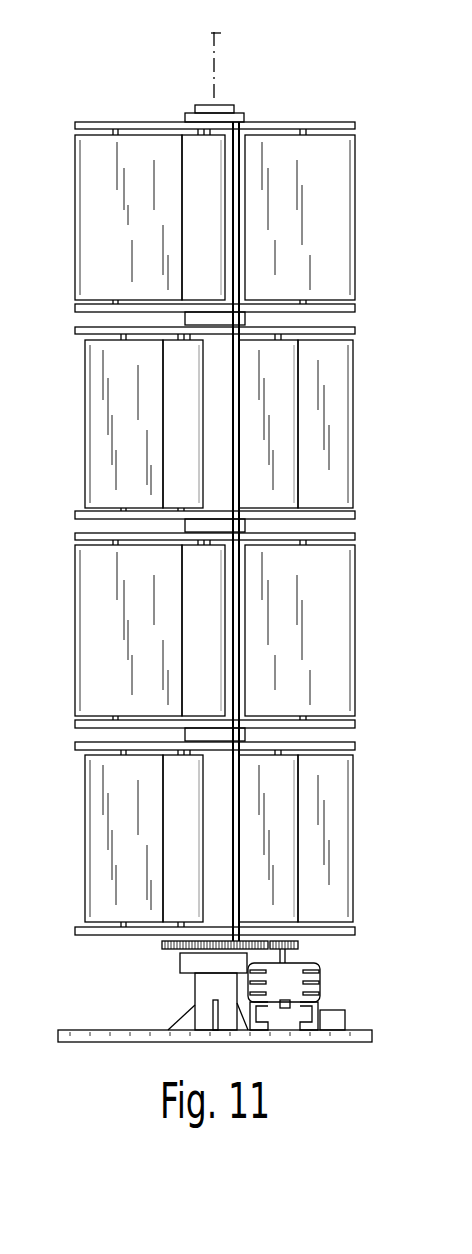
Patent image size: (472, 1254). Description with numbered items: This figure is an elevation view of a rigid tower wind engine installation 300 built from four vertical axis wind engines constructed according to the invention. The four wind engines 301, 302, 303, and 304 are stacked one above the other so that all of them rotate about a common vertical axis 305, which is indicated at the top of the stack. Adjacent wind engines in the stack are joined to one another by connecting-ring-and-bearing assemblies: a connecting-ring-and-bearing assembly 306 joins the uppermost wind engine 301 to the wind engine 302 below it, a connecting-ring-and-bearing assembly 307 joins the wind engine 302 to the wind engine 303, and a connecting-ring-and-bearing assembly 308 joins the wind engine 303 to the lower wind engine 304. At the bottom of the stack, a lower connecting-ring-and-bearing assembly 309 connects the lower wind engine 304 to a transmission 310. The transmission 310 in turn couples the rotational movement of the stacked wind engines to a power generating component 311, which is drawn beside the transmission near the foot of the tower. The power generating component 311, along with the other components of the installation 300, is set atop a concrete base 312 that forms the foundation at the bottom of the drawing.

The wind engine installation 300 is at (99, 58).
The wind engine 301 is at (355, 124).
The wind engine 302 is at (355, 334).
The wind engine 303 is at (355, 536).
The wind engine 304 is at (355, 745).
The vertical axis 305 is at (216, 37).
The connecting-ring-and-bearing assembly 306 is at (234, 322).
The connecting-ring-and-bearing assembly 307 is at (243, 520).
The connecting-ring-and-bearing assembly 308 is at (234, 732).
The lower connecting-ring-and-bearing assembly 309 is at (241, 942).
The transmission 310 is at (183, 970).
The power generating component 311 is at (322, 978).
The concrete base 312 is at (133, 1030).